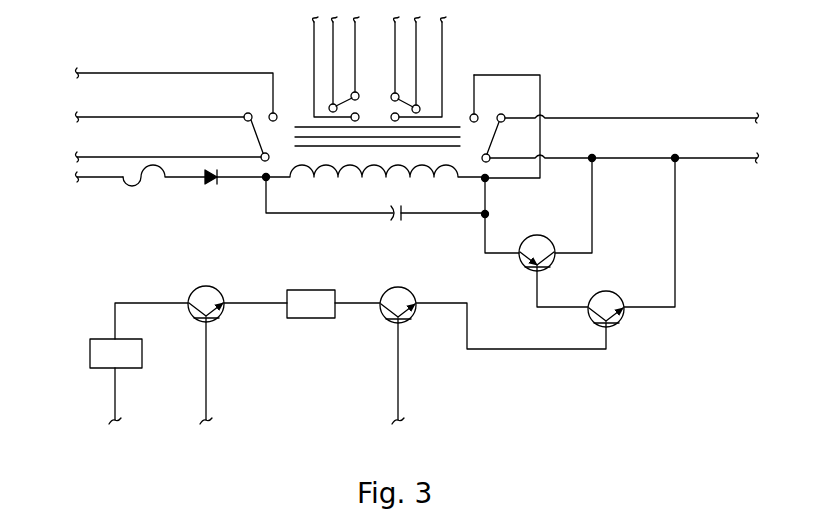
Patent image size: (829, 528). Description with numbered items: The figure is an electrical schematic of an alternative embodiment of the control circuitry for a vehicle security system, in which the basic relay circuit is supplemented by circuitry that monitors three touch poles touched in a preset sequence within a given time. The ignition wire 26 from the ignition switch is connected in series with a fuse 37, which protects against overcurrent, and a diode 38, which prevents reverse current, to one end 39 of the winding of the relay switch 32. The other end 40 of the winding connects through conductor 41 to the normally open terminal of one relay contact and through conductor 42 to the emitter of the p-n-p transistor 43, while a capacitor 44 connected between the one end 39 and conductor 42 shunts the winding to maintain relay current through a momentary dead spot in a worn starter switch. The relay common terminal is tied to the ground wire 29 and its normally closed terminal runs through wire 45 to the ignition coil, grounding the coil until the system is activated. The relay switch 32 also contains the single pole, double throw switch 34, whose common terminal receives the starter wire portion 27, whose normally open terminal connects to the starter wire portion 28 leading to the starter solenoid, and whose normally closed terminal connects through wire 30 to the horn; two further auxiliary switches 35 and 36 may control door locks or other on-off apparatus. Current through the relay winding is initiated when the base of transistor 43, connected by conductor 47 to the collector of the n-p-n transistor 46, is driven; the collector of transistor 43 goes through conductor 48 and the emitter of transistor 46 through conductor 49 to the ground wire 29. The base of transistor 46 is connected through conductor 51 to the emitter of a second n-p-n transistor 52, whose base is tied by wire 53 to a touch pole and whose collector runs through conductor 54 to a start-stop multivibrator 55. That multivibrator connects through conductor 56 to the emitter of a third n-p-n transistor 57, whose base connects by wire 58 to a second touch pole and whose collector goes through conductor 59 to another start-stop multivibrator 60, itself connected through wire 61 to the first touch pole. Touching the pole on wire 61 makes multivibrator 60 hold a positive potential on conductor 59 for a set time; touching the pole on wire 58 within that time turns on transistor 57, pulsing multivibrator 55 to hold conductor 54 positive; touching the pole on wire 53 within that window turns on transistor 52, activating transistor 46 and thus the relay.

The ignition wire 26 is at (93, 177).
The starter wire portion 27 is at (156, 157).
The starter wire portion 28 is at (151, 73).
The ground wire 29 is at (618, 158).
The horn wire 30 is at (149, 117).
The relay switch 32 is at (355, 190).
The single pole, double throw switch 34 is at (492, 130).
The auxiliary single pole, double throw switch 35 is at (257, 142).
The auxiliary single pole, double throw switch 36 is at (348, 105).
The fuse 37 is at (141, 186).
The diode 38 is at (205, 179).
The one end of relay winding 39 is at (264, 180).
The other end of relay winding 40 is at (487, 178).
The conductor 41 is at (540, 105).
The conductor 42 is at (485, 228).
The p-n-p transistor 43 is at (533, 235).
The capacitor 44 is at (394, 217).
The wire 45 is at (640, 118).
The n-p-n transistor 46 is at (606, 300).
The conductor 47 is at (537, 292).
The conductor 48 is at (592, 236).
The conductor 49 is at (675, 228).
The conductor 51 is at (492, 349).
The second n-p-n transistor 52 is at (398, 289).
The wire 53 is at (398, 384).
The conductor 54 is at (367, 306).
The start-stop multivibrator 55 is at (294, 319).
The conductor 56 is at (261, 305).
The third n-p-n transistor 57 is at (201, 289).
The wire 58 is at (206, 360).
The conductor 59 is at (154, 302).
The start-stop multivibrator 60 is at (90, 366).
The wire 61 is at (115, 390).